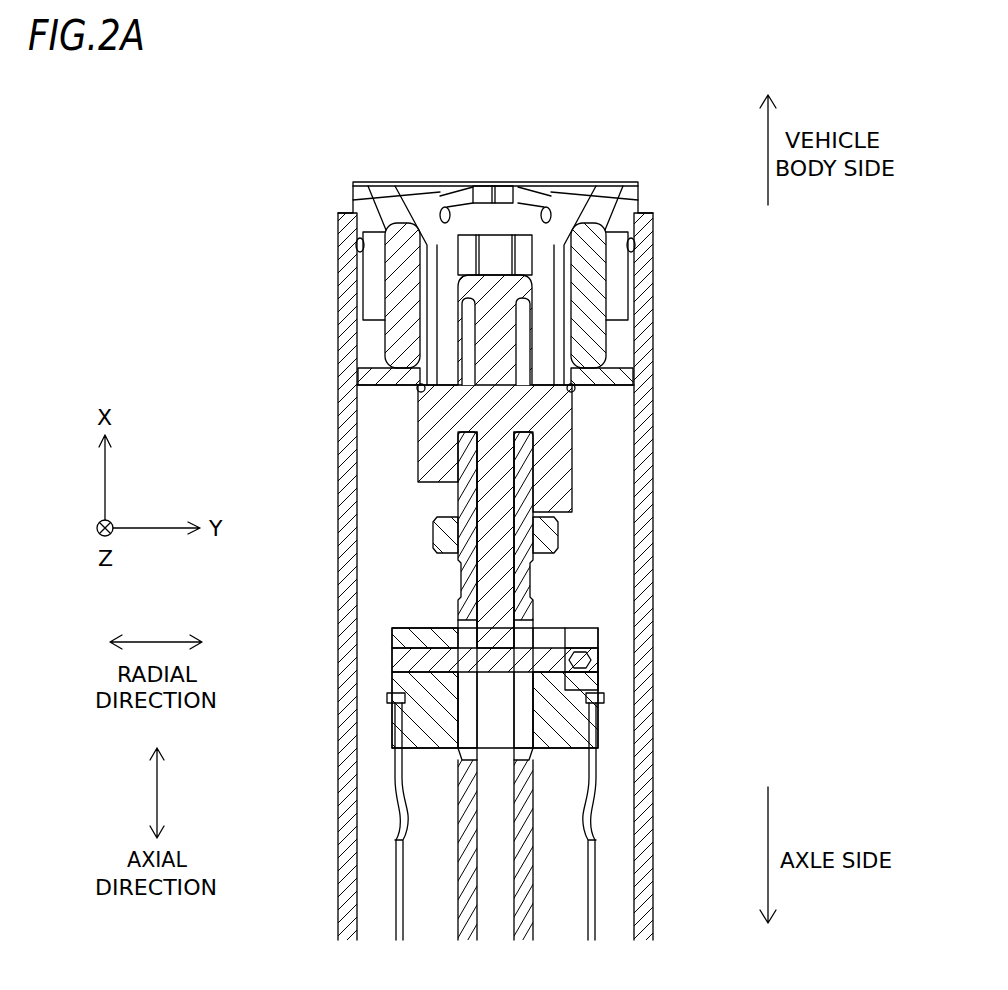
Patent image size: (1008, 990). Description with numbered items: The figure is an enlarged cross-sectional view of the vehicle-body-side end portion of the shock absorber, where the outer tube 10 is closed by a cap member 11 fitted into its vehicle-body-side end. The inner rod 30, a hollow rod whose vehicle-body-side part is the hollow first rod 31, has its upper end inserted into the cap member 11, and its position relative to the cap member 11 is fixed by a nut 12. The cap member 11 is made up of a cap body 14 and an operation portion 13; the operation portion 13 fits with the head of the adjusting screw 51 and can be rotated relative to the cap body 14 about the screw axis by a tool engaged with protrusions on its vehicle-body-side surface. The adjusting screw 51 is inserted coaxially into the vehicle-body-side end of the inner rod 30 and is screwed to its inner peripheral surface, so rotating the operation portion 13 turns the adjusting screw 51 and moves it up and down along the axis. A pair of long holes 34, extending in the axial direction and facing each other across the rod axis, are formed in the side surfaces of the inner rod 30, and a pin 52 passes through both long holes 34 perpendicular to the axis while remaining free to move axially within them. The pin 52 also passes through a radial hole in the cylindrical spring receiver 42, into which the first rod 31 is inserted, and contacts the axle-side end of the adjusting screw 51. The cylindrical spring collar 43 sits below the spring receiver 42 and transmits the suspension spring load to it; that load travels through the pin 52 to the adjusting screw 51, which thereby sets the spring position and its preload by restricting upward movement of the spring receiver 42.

The outer tube 10 is at (652, 655).
The cap member 11 is at (641, 149).
The nut 12 is at (552, 637).
The operation portion 13 is at (475, 182).
The cap body 14 is at (620, 200).
The inner rod 30 is at (609, 686).
The first rod 31 is at (533, 785).
The long hole 34 is at (467, 632).
The spring receiver 42 is at (547, 532).
The spring collar 43 is at (597, 872).
The adjusting screw 51 is at (480, 515).
The pin 52 is at (595, 642).